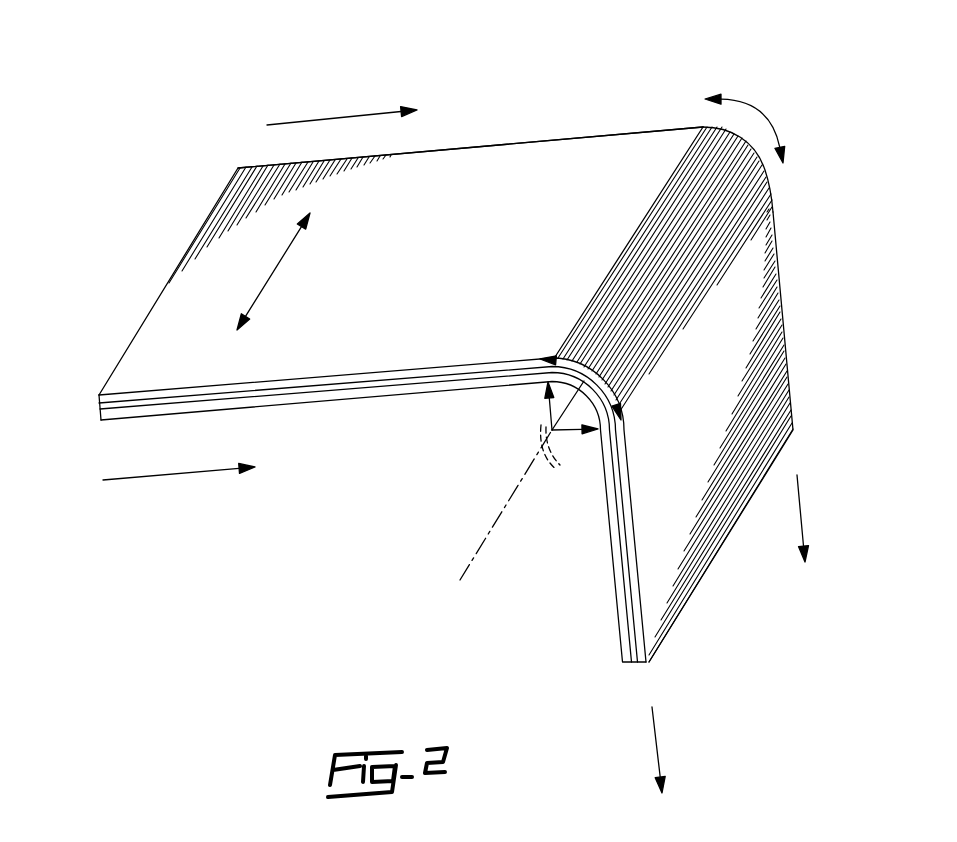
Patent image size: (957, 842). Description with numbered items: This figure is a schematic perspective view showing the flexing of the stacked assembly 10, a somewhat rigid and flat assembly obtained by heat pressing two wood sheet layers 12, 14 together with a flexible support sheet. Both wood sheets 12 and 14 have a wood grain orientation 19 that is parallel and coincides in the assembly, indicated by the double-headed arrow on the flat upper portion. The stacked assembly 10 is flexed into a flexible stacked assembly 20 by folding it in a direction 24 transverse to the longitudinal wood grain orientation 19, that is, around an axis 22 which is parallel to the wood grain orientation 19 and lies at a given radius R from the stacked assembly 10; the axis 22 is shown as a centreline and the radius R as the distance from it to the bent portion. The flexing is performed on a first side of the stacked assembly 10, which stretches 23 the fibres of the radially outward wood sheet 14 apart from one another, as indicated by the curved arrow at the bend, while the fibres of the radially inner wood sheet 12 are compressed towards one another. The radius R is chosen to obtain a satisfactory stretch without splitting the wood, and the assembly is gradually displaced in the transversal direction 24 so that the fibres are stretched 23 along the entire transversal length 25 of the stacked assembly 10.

The stacked assembly 10 is at (225, 132).
The wood sheet layer 12 is at (357, 393).
The wood sheet layer 14 is at (465, 367).
The wood grain orientation 19 is at (270, 280).
The flexible stacked assembly 20 is at (737, 591).
The axis 22 is at (467, 555).
The stretching 23 is at (758, 112).
The direction 24 is at (180, 473).
The transversal length 25 is at (462, 147).
The radius R is at (569, 447).